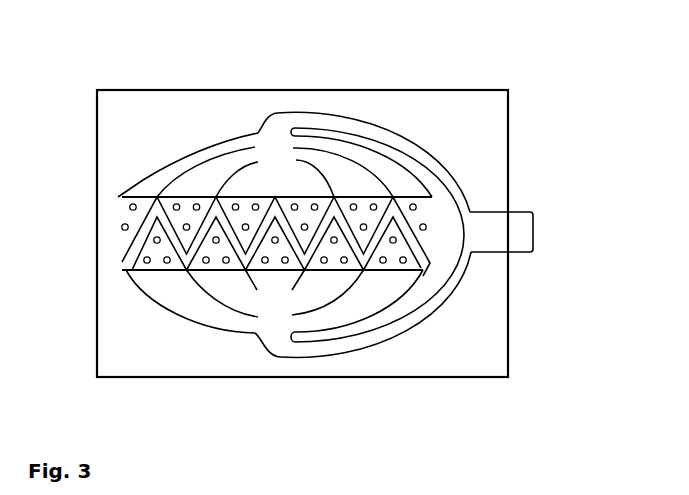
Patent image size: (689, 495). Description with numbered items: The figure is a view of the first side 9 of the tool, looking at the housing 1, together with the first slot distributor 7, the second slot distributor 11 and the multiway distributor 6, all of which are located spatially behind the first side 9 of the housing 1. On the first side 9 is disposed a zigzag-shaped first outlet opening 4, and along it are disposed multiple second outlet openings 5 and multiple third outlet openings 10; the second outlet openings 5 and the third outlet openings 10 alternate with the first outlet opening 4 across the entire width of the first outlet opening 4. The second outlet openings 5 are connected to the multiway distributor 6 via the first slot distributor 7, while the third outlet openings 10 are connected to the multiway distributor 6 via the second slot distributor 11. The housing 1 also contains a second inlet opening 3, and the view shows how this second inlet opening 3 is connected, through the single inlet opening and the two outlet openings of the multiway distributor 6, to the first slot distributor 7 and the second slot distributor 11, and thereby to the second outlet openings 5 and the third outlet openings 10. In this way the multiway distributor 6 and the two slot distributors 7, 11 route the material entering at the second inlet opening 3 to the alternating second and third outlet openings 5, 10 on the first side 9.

The housing 1 is at (326, 261).
The second inlet opening 3 is at (523, 225).
The first outlet opening 4 is at (118, 218).
The second outlet openings 5 is at (130, 206).
The multiway distributor 6 is at (475, 198).
The first slot distributor 7 is at (183, 143).
The first side 9 is at (478, 364).
The third outlet openings 10 is at (136, 267).
The second slot distributor 11 is at (234, 306).